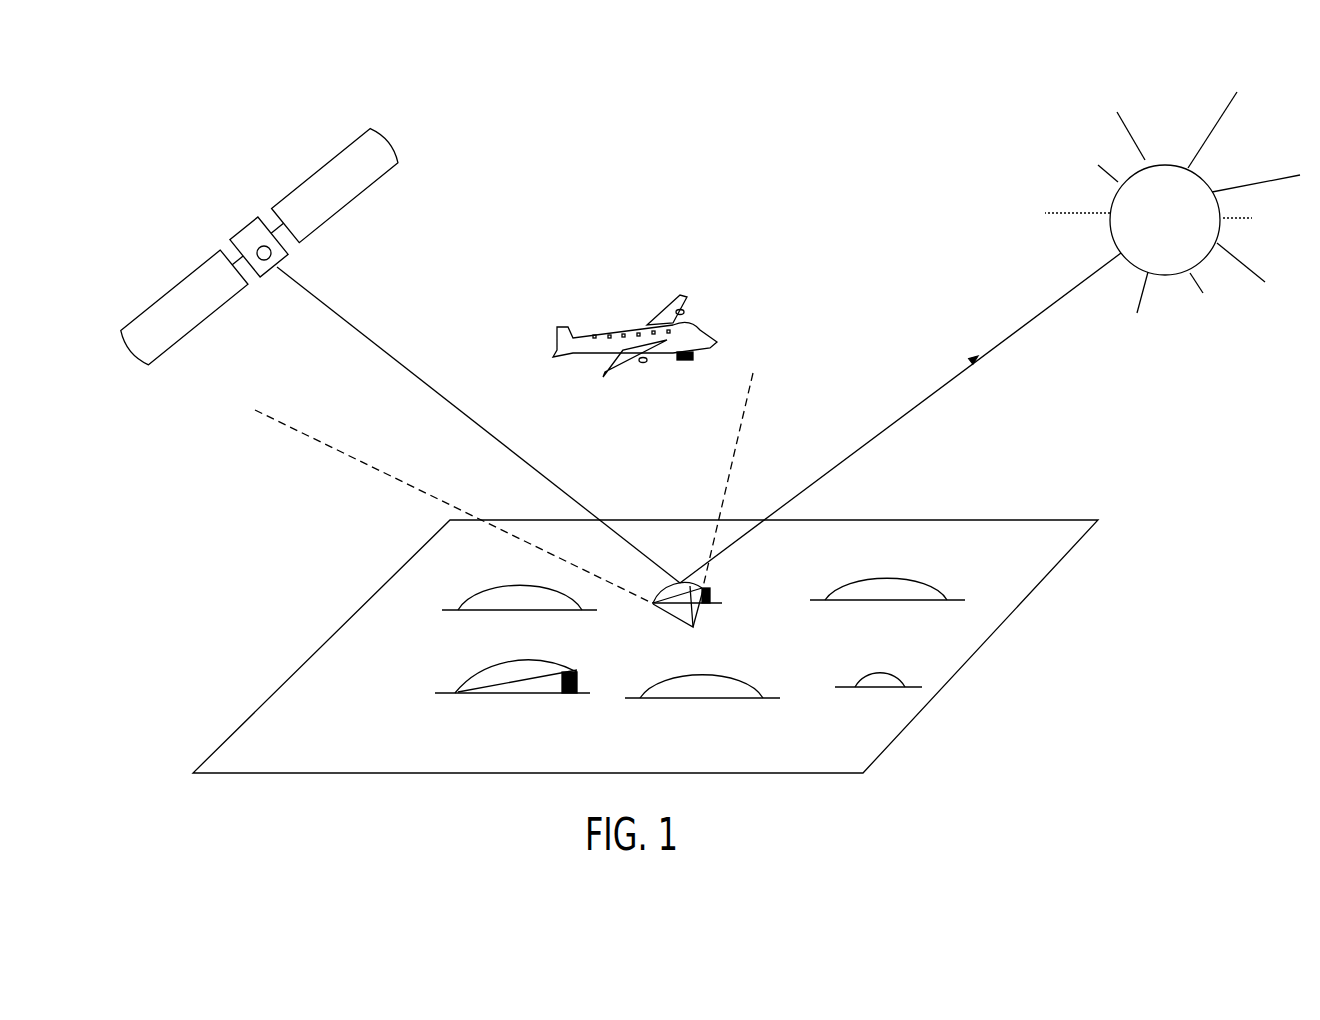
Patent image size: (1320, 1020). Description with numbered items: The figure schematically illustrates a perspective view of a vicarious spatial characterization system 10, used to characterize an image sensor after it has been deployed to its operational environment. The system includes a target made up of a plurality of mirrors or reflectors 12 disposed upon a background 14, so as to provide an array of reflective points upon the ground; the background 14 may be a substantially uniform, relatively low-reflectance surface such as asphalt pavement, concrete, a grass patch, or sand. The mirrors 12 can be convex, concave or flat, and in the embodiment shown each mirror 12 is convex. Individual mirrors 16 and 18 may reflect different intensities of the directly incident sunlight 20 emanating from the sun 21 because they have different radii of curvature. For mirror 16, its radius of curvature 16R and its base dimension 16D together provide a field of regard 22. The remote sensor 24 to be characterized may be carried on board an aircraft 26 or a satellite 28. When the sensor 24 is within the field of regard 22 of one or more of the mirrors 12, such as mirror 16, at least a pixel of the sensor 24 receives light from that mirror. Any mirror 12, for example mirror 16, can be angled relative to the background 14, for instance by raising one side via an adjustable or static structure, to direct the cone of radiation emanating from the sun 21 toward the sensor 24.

The vicarious spatial characterization system 10 is at (928, 207).
The mirrors 12 is at (947, 577).
The background 14 is at (960, 668).
The mirror 16 is at (677, 583).
The base dimension 16D is at (663, 608).
The radius of curvature 16R is at (697, 611).
The mirror 18 is at (470, 610).
The directly incident sunlight 20 is at (933, 390).
The sun 21 is at (1165, 163).
The field of regard 22 is at (709, 454).
The remote sensor 24 is at (258, 240).
The aircraft 26 is at (610, 330).
The satellite 28 is at (322, 166).